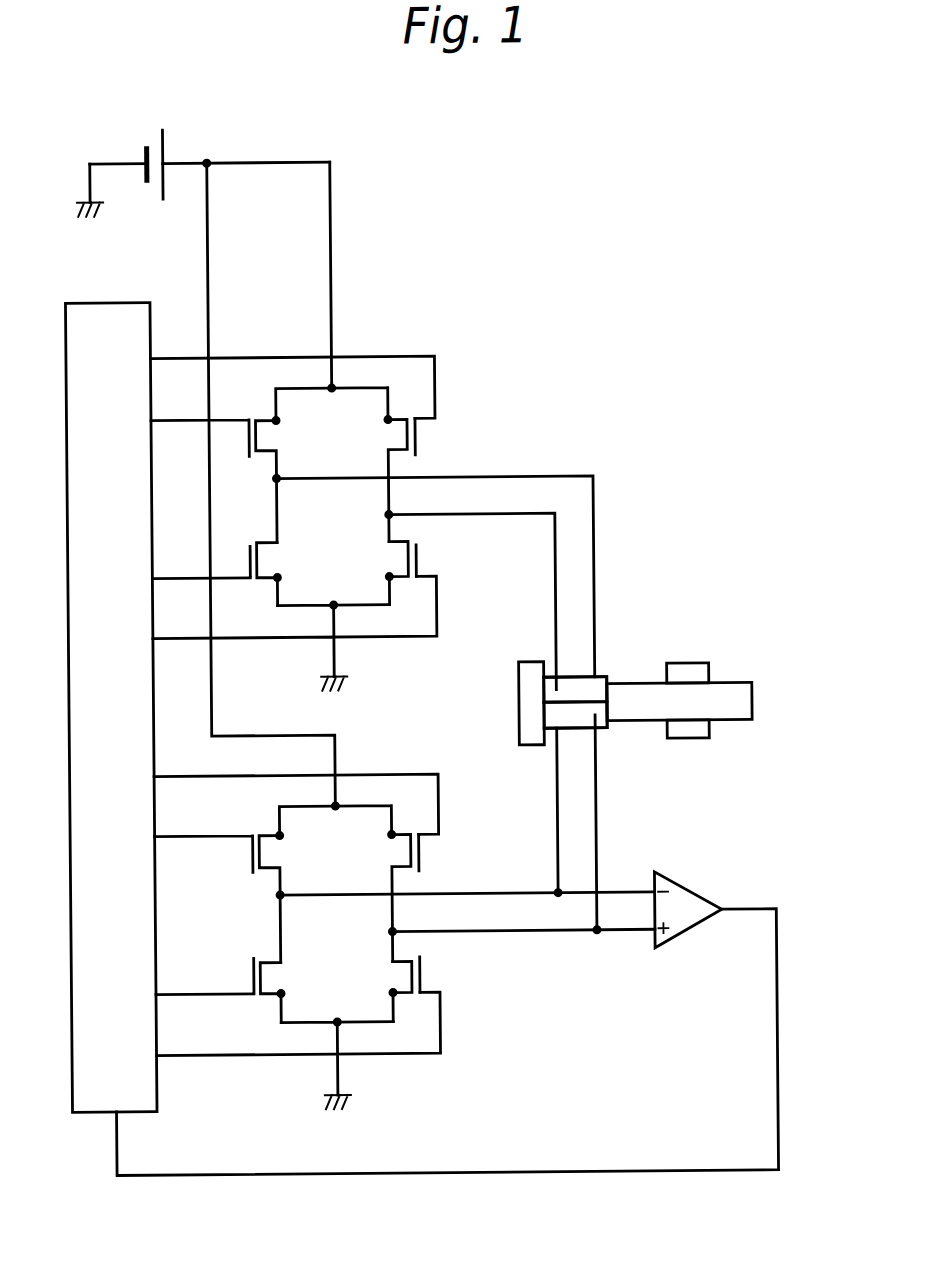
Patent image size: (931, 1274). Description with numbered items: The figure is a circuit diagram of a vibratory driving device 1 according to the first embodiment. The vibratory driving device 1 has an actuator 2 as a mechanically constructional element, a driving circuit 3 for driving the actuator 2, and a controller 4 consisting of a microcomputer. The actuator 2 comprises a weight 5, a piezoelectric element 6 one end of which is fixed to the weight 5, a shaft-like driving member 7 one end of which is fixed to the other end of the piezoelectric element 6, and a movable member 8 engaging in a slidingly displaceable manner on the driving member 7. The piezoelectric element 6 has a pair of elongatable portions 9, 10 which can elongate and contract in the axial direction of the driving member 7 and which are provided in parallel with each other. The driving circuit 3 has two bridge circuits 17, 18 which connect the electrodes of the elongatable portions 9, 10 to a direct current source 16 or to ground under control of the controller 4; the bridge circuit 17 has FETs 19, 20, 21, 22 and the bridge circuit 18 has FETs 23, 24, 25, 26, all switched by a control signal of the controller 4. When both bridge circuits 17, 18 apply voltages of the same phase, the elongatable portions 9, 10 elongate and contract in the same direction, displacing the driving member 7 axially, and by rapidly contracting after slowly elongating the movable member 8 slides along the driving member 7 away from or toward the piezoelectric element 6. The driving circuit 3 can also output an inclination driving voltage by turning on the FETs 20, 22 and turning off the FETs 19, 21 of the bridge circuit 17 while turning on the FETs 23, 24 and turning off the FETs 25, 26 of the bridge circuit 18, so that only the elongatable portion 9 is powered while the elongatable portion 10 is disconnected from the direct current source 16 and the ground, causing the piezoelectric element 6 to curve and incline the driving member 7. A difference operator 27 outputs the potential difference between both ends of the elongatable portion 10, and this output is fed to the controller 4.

The vibratory driving device 1 is at (589, 194).
The actuator 2 is at (722, 615).
The driving circuit 3 is at (415, 260).
The controller 4 is at (88, 301).
The weight 5 is at (518, 706).
The piezoelectric element 6 is at (575, 675).
The driving member 7 is at (742, 686).
The movable member 8 is at (690, 666).
The elongatable portion 9 is at (603, 678).
The elongatable portion 10 is at (602, 730).
The direct current source 16 is at (151, 146).
The bridge circuit 17 is at (360, 355).
The bridge circuit 18 is at (361, 772).
The FET 19 is at (272, 436).
The FET 20 is at (390, 435).
The FET 21 is at (399, 558).
The FET 22 is at (269, 559).
The FET 23 is at (275, 852).
The FET 24 is at (390, 852).
The FET 25 is at (401, 973).
The FET 26 is at (274, 976).
The difference operator 27 is at (686, 890).